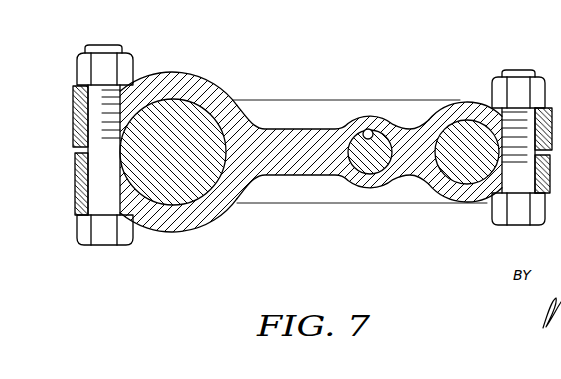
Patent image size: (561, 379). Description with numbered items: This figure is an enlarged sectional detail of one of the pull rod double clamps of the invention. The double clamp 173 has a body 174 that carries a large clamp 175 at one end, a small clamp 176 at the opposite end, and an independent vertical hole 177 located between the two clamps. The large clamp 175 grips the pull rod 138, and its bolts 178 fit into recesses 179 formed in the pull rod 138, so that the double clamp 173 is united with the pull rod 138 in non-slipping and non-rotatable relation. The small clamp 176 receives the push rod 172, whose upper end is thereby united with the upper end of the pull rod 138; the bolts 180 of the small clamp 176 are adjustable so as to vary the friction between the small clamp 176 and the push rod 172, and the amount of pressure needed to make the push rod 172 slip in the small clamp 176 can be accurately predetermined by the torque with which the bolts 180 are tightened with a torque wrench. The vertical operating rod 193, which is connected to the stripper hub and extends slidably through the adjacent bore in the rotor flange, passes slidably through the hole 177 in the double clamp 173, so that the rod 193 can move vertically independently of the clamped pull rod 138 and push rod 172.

The pull rod 138 is at (177, 192).
The push rod 172 is at (465, 175).
The double clamp 173 is at (297, 112).
The body 174 is at (295, 192).
The large clamp 175 is at (160, 82).
The small clamp 176 is at (467, 102).
The vertical hole 177 is at (368, 129).
The bolts 178 is at (105, 45).
The recesses 179 is at (120, 160).
The bolts 180 is at (518, 72).
The vertical operating rod 193 is at (373, 162).